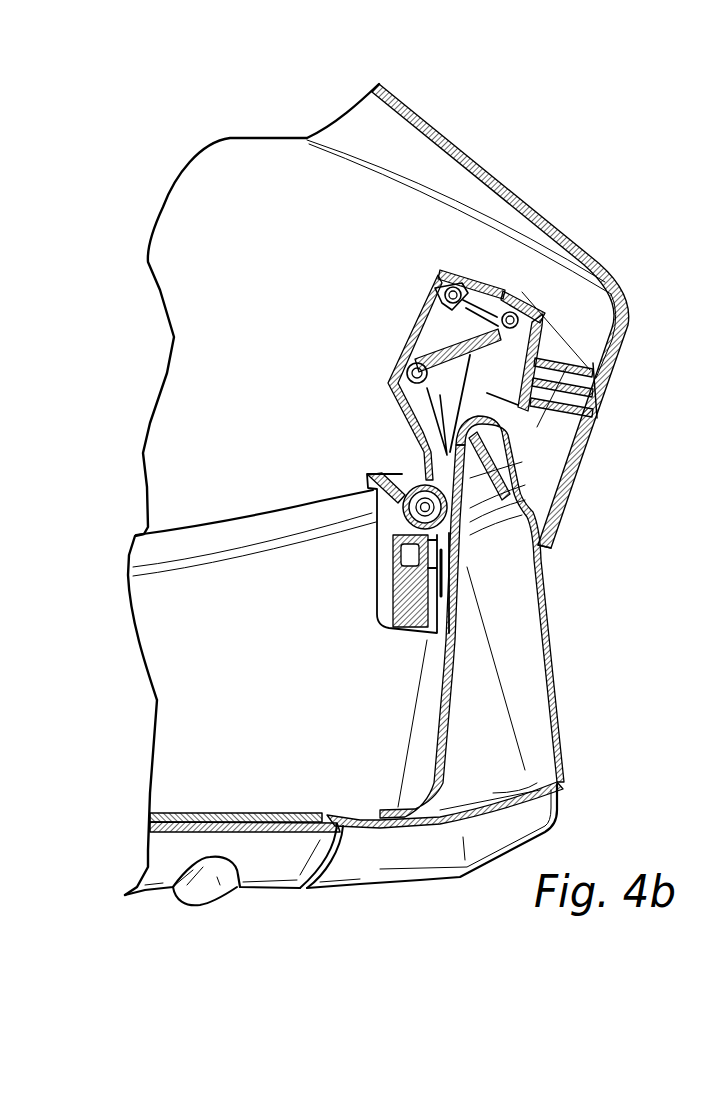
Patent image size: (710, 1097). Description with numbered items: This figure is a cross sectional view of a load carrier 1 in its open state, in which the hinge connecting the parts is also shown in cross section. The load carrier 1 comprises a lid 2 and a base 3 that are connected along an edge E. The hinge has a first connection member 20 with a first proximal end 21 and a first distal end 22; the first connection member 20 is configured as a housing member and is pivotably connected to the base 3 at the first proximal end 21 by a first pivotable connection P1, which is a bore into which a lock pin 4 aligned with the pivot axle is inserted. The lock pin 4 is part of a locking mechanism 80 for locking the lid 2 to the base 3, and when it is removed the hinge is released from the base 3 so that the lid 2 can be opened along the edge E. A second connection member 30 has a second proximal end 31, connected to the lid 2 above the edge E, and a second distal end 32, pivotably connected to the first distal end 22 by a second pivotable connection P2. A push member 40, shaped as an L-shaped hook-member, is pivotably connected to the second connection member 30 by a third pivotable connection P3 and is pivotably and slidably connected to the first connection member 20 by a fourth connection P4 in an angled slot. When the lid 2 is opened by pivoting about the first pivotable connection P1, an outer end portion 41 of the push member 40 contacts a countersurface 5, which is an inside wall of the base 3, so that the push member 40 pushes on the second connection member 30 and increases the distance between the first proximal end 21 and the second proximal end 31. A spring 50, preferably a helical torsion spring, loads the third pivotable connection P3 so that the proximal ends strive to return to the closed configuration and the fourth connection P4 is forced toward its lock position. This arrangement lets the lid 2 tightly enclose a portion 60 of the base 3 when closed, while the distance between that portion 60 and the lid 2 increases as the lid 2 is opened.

The load carrier 1 is at (620, 161).
The lid 2 is at (587, 249).
The base 3 is at (565, 778).
The lock pin 4 is at (451, 420).
The countersurface 5 is at (508, 497).
The first connection member 20 is at (413, 429).
The first proximal end 21 is at (373, 492).
The first distal end 22 is at (422, 303).
The second connection member 30 is at (565, 331).
The second proximal end 31 is at (597, 393).
The second distal end 32 is at (468, 290).
The push member 40 is at (400, 401).
The outer end portion 41 is at (540, 543).
The spring 50 is at (512, 295).
The portion 60 is at (518, 462).
The locking mechanism 80 is at (410, 637).
The first pivotable connection P1 is at (397, 532).
The second pivotable connection P2 is at (447, 282).
The third pivotable connection P3 is at (513, 298).
The fourth connection P4 is at (404, 379).
The edge E is at (567, 588).